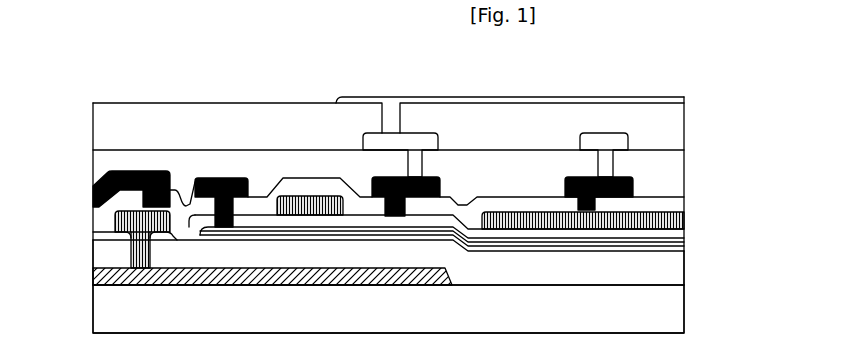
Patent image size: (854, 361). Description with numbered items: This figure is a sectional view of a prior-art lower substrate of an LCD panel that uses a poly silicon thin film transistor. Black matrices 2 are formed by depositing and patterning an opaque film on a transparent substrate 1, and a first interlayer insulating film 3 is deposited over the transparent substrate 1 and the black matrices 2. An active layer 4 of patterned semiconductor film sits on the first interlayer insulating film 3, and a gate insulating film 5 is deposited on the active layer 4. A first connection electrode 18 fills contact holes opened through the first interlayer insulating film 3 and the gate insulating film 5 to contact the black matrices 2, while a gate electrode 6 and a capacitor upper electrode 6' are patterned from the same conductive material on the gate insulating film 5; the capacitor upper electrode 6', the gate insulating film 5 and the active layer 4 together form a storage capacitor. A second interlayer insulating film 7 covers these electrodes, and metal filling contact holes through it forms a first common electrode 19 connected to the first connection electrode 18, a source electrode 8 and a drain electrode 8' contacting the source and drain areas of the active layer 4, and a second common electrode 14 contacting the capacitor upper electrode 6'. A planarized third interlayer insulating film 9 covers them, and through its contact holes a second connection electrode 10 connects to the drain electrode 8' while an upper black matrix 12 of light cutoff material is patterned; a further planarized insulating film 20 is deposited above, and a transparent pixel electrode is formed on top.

The transparent substrate 1 is at (667, 312).
The black matrices 2 is at (95, 275).
The first interlayer insulating film 3 is at (667, 277).
The active layer 4 is at (678, 248).
The gate insulating film 5 is at (673, 235).
The gate electrode 6 is at (301, 133).
The capacitor upper electrode 6' is at (614, 220).
The second interlayer insulating film 7 is at (673, 205).
The source electrode 8 is at (216, 139).
The drain electrode 8' is at (370, 139).
The third interlayer insulating film 9 is at (105, 162).
The second connection electrode 10 is at (428, 135).
The upper black matrix 12 is at (630, 139).
The second common electrode 14 is at (567, 103).
The first connection electrode 18 is at (122, 222).
The first common electrode 19 is at (93, 190).
The upper insulating layer 20 is at (675, 117).